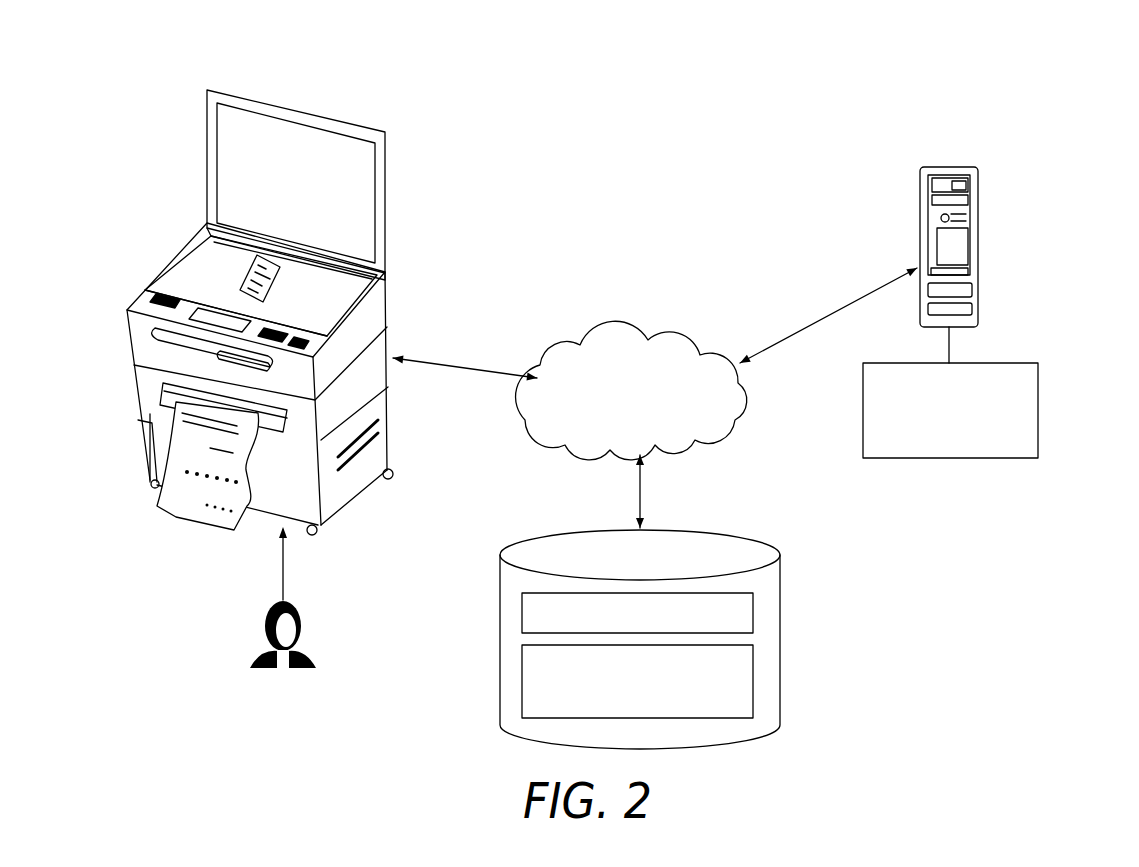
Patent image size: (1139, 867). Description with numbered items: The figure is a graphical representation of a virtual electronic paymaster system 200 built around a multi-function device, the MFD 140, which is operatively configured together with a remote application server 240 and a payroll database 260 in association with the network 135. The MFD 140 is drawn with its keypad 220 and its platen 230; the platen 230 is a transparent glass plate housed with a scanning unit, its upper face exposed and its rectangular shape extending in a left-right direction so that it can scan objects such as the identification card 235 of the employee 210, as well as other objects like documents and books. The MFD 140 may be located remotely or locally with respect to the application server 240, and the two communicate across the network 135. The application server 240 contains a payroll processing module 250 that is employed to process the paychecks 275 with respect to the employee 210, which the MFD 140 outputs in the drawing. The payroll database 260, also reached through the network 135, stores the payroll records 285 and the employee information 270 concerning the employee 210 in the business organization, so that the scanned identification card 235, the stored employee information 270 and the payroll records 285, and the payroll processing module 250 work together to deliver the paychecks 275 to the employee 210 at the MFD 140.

The virtual electronic paymaster system 200 is at (777, 60).
The multi-function device 140 is at (233, 93).
The keypad 220 is at (147, 292).
The platen 230 is at (332, 289).
The identification card 235 is at (272, 283).
The paychecks 275 is at (183, 508).
The employee 210 is at (268, 613).
The network 135 is at (618, 333).
The remote application server 240 is at (979, 236).
The payroll processing module 250 is at (1040, 410).
The payroll database 260 is at (738, 547).
The payroll records 285 is at (753, 617).
The employee information 270 is at (753, 682).